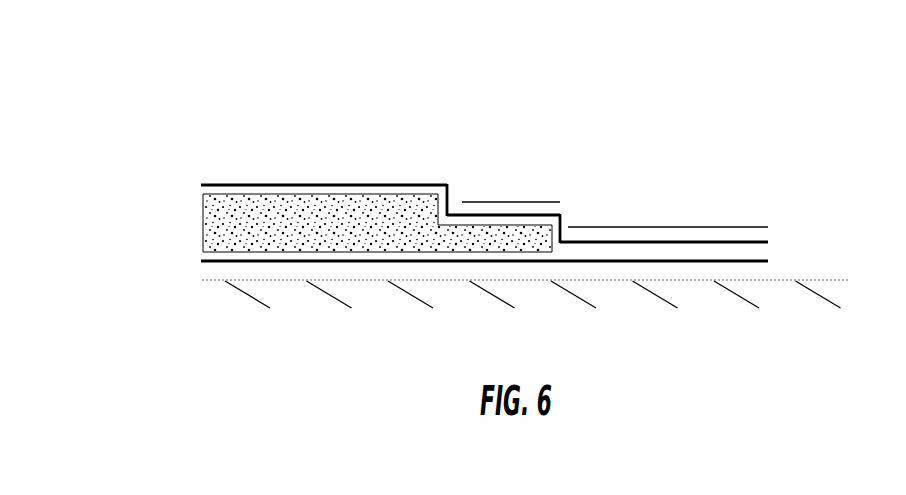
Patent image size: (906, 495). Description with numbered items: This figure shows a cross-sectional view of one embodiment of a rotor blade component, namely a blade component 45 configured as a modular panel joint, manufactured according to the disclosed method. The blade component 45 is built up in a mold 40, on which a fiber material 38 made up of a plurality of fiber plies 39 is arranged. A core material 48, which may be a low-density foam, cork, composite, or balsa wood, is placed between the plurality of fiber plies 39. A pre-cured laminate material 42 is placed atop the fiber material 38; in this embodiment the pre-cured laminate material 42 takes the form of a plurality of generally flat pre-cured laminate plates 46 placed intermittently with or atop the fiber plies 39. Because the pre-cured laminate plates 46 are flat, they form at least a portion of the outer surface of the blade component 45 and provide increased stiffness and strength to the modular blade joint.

The blade component 45 is at (116, 89).
The fiber material 38 is at (379, 185).
The fiber plies 39 is at (363, 260).
The pre-cured laminate material 42 is at (609, 226).
The pre-cured laminate plates 46 is at (495, 202).
The core material 48 is at (200, 208).
The mold 40 is at (795, 278).